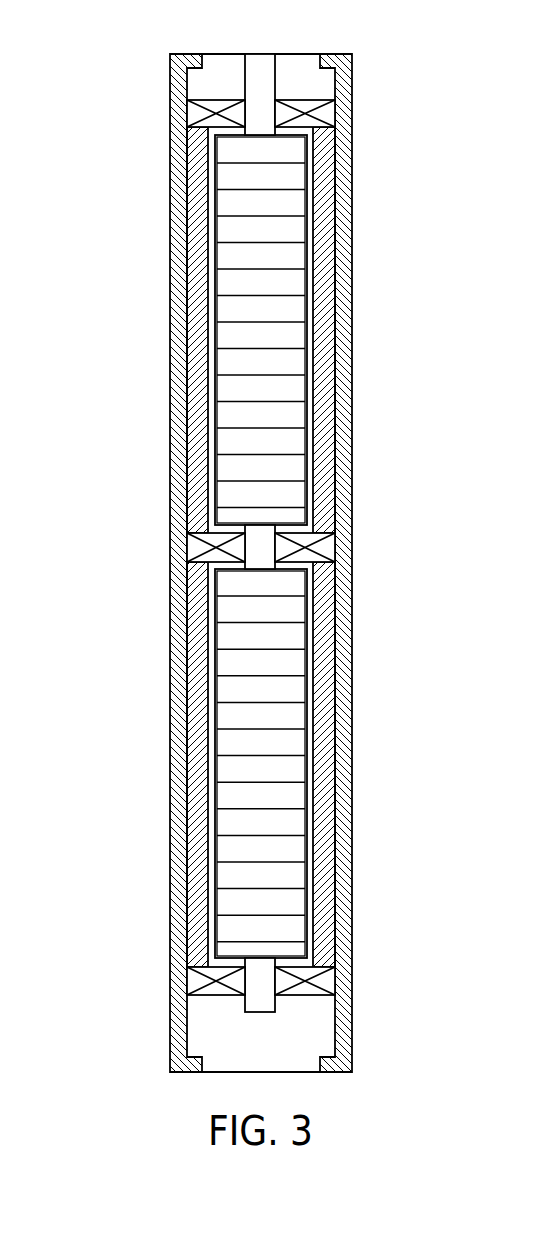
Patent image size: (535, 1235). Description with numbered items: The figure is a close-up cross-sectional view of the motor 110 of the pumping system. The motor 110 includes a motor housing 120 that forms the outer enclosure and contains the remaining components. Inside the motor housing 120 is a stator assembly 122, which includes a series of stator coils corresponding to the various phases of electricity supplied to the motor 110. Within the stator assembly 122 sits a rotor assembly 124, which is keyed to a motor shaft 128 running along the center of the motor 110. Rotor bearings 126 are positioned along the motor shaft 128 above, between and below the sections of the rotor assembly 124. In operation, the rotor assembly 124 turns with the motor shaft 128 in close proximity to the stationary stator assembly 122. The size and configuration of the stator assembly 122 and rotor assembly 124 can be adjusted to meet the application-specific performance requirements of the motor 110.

The motor 110 is at (228, 542).
The motor housing 120 is at (352, 336).
The stator assembly 122 is at (328, 307).
The rotor assembly 124 is at (290, 213).
The rotor bearings 126 is at (305, 115).
The motor shaft 128 is at (260, 85).